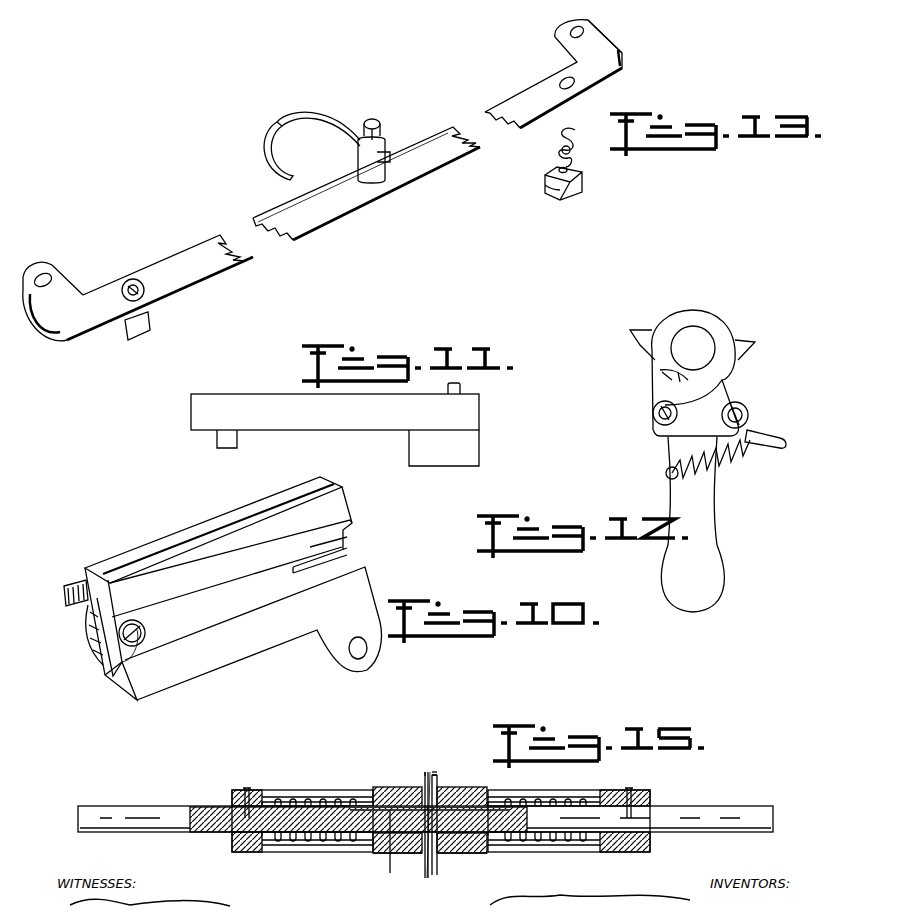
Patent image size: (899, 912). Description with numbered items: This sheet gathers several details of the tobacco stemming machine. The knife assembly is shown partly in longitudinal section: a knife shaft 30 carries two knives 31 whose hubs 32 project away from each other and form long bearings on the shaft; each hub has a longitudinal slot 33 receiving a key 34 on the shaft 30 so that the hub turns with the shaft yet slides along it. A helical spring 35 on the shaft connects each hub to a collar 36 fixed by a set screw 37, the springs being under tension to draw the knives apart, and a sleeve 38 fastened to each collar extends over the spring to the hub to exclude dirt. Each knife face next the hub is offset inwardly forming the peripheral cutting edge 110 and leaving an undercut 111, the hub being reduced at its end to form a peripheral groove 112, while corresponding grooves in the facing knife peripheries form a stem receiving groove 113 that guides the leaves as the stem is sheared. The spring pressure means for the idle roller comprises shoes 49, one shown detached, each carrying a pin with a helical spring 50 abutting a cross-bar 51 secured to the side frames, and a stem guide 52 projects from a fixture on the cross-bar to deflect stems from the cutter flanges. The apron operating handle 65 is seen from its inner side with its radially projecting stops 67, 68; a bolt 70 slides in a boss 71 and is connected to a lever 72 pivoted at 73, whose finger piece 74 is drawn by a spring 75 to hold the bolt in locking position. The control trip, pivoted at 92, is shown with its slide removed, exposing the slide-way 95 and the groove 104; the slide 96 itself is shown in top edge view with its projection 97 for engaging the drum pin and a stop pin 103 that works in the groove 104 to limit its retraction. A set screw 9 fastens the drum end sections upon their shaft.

In FIG. 10, the set screw 9 is at (190, 530).
In FIG. 15, the knife shaft 30 is at (760, 808).
In FIG. 15, the knife 31 is at (430, 878).
In FIG. 15, the hub 32 is at (385, 787).
In FIG. 15, the longitudinal slot 33 is at (425, 775).
In FIG. 15, the key 34 is at (390, 860).
In FIG. 15, the helical spring 35 is at (308, 795).
In FIG. 15, the collar 36 is at (234, 792).
In FIG. 15, the set screw 37 is at (247, 790).
In FIG. 15, the sleeve 38 is at (326, 852).
In FIG. 13, the shoe 49 is at (137, 330).
In FIG. 13, the helical spring 50 is at (558, 147).
In FIG. 13, the cross-bar 51 is at (440, 140).
In FIG. 13, the stem guide 52 is at (262, 150).
In FIG. 12, the handle 65 is at (705, 553).
In FIG. 12, the stop 67 is at (636, 335).
In FIG. 12, the stop 68 is at (755, 342).
In FIG. 12, the bolt 70 is at (680, 372).
In FIG. 12, the boss 71 is at (655, 384).
In FIG. 12, the lever 72 is at (685, 425).
In FIG. 12, the pivot 73 is at (748, 410).
In FIG. 12, the finger piece 74 is at (785, 450).
In FIG. 12, the spring 75 is at (735, 462).
In FIG. 10, the pivot 92 is at (75, 583).
In FIG. 10, the slide-way 95 is at (122, 690).
In FIG. 11, the slide 96 is at (210, 411).
In FIG. 11, the projection 97 is at (475, 451).
In FIG. 11, the stop pin 103 is at (462, 388).
In FIG. 10, the groove 104 is at (348, 545).
In FIG. 15, the peripheral cutting edge 110 is at (390, 860).
In FIG. 15, the undercut 111 is at (437, 775).
In FIG. 15, the peripheral groove 112 is at (425, 772).
In FIG. 15, the stem receiving groove 113 is at (435, 772).